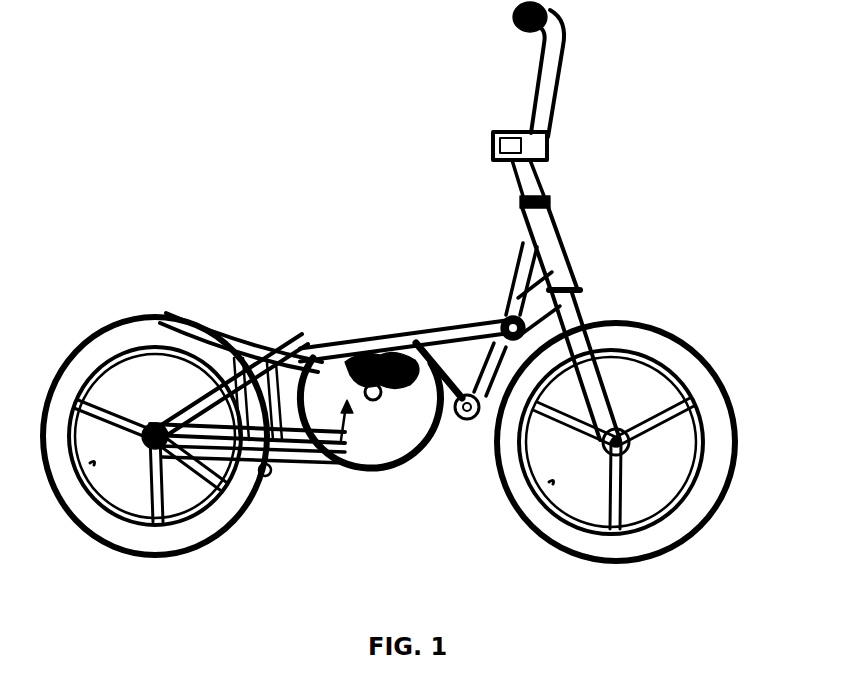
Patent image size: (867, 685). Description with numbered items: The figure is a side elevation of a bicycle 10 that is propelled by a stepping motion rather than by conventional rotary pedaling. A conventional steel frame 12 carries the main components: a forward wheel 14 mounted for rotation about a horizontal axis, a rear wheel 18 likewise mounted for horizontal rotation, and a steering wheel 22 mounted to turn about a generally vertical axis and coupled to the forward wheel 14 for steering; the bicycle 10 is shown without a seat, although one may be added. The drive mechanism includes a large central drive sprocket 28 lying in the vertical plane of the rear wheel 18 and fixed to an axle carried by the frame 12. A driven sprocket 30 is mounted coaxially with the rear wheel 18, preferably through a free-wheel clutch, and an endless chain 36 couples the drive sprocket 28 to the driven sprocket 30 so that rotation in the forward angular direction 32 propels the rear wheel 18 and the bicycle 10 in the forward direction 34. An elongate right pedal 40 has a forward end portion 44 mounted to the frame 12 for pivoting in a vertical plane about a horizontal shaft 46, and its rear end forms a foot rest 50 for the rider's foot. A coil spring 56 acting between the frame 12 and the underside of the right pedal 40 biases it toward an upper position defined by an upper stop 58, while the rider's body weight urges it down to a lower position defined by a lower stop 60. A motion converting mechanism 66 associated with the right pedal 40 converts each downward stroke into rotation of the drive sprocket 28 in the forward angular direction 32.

The bicycle 10 is at (195, 118).
The frame 12 is at (512, 258).
The forward wheel 14 is at (690, 343).
The rear wheel 18 is at (93, 347).
The steering wheel 22 is at (542, 80).
The drive sprocket 28 is at (400, 452).
The driven sprocket 30 is at (203, 465).
The forward angular direction 32 is at (212, 305).
The forward direction 34 is at (695, 248).
The endless chain 36 is at (378, 320).
The right pedal 40 is at (305, 338).
The forward end portion 44 is at (468, 322).
The horizontal shaft 46 is at (505, 312).
The foot rest 50 is at (238, 357).
The coil spring 56 is at (482, 410).
The upper stop 58 is at (270, 360).
The lower stop 60 is at (270, 483).
The motion converting mechanism 66 is at (357, 450).